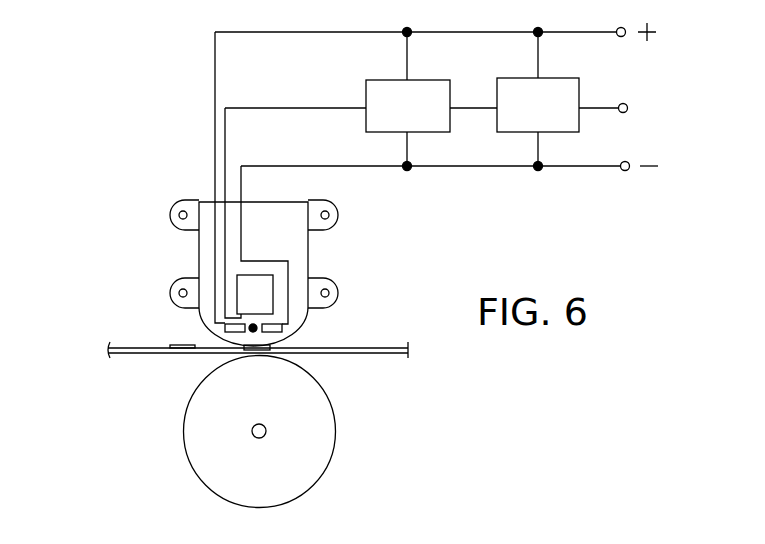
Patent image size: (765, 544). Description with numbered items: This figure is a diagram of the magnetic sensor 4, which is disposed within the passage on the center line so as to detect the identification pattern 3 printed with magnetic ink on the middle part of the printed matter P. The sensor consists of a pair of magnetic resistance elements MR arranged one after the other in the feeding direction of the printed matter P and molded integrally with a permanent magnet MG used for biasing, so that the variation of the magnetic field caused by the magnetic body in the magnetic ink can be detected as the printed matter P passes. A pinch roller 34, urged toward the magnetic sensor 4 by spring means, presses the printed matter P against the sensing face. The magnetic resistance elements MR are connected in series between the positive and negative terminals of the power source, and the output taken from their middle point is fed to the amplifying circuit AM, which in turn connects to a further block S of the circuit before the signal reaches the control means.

The magnetic sensor 4 is at (172, 258).
The identification pattern 3 is at (253, 353).
The pinch roller 34 is at (330, 443).
The permanent magnet MG is at (270, 295).
The magnetic resistance elements MR is at (228, 337).
The printed matter P is at (368, 355).
The amplifying circuit AM is at (408, 106).
The switch S is at (538, 105).